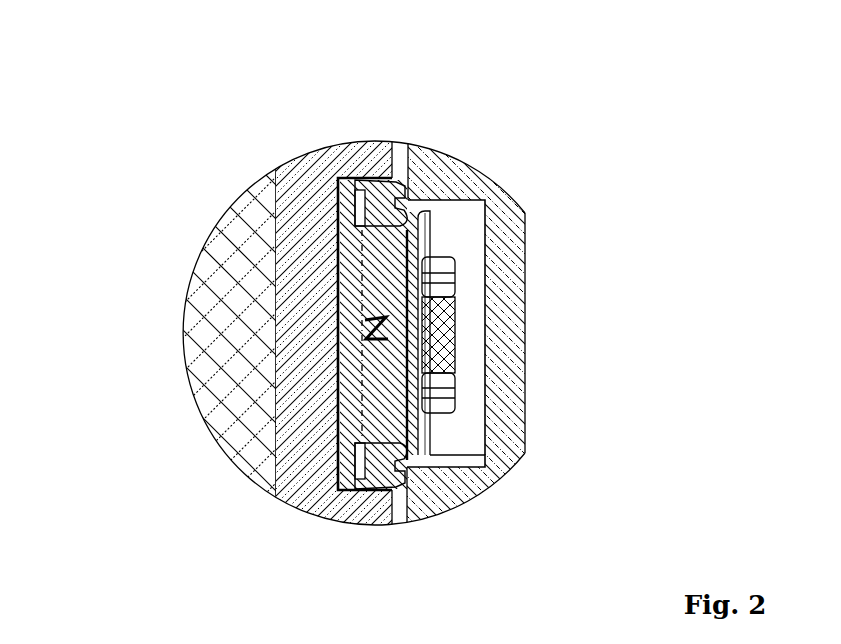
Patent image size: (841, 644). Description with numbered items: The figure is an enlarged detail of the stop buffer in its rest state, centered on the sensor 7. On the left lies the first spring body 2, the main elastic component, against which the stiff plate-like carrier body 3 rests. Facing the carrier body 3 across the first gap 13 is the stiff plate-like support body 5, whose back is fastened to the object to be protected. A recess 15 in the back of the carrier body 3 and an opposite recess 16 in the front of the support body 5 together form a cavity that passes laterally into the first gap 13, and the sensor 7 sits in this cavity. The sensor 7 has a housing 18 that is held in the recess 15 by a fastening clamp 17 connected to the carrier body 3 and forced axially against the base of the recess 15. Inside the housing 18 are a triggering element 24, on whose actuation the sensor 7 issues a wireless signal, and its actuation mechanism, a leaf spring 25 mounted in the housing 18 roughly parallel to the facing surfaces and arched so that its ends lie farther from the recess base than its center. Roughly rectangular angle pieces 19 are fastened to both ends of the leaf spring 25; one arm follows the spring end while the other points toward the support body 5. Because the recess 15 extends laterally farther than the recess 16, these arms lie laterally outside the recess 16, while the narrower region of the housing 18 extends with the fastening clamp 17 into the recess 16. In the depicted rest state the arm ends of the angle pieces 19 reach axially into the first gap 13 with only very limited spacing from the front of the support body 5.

The first spring body 2 is at (228, 340).
The carrier body 3 is at (318, 180).
The support body 5 is at (455, 165).
The sensor 7 is at (447, 232).
The first gap 13 is at (396, 150).
The recess 15 is at (353, 483).
The recess 16 is at (450, 437).
The fastening clamp 17 is at (447, 330).
The housing 18 is at (347, 408).
The angle pieces 19 is at (397, 530).
The triggering element 24 is at (352, 322).
The leaf spring 25 is at (353, 358).